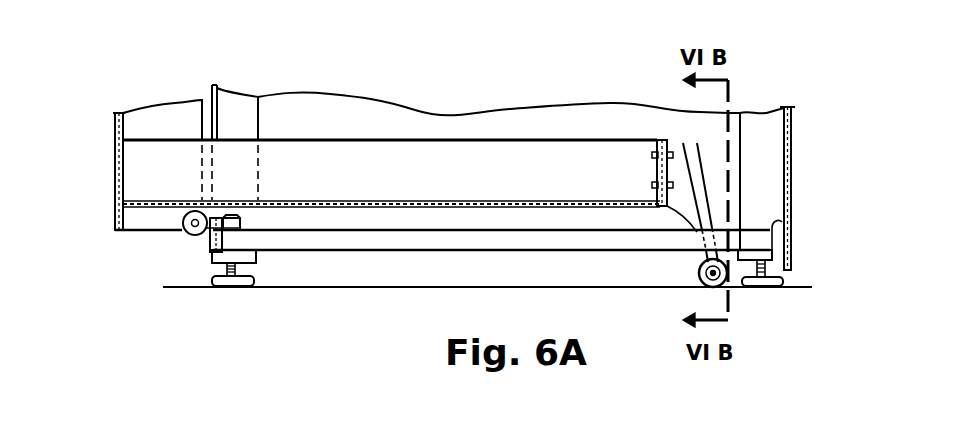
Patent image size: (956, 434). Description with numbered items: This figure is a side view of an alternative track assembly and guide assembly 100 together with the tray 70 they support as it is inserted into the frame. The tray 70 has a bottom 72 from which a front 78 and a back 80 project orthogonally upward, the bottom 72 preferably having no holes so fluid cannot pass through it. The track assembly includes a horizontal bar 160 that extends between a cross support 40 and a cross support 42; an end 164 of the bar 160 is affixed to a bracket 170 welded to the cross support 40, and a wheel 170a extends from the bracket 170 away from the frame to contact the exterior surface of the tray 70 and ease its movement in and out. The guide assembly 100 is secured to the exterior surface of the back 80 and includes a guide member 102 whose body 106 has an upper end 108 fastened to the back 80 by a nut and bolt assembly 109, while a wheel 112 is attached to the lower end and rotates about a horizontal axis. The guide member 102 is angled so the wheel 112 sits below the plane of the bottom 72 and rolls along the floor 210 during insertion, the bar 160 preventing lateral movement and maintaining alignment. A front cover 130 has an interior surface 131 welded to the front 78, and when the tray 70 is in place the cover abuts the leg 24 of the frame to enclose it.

The leg 24 is at (235, 105).
The cross support 40 is at (212, 260).
The cross support 42 is at (765, 222).
The tray 70 is at (505, 158).
The bottom 72 is at (420, 200).
The front 78 is at (115, 160).
The back 80 is at (663, 143).
The guide assembly 100 is at (762, 91).
The guide member 102 is at (697, 143).
The body 106 is at (705, 205).
The end 108 is at (655, 172).
The nut and bolt assembly 109 is at (653, 192).
The wheel 112 is at (698, 285).
The front cover 130 is at (114, 137).
The interior surface 131 is at (125, 112).
The bar 160 is at (313, 238).
The end 164 is at (210, 240).
The bracket 170 is at (240, 216).
The wheel 170a is at (185, 233).
The floor 210 is at (450, 288).